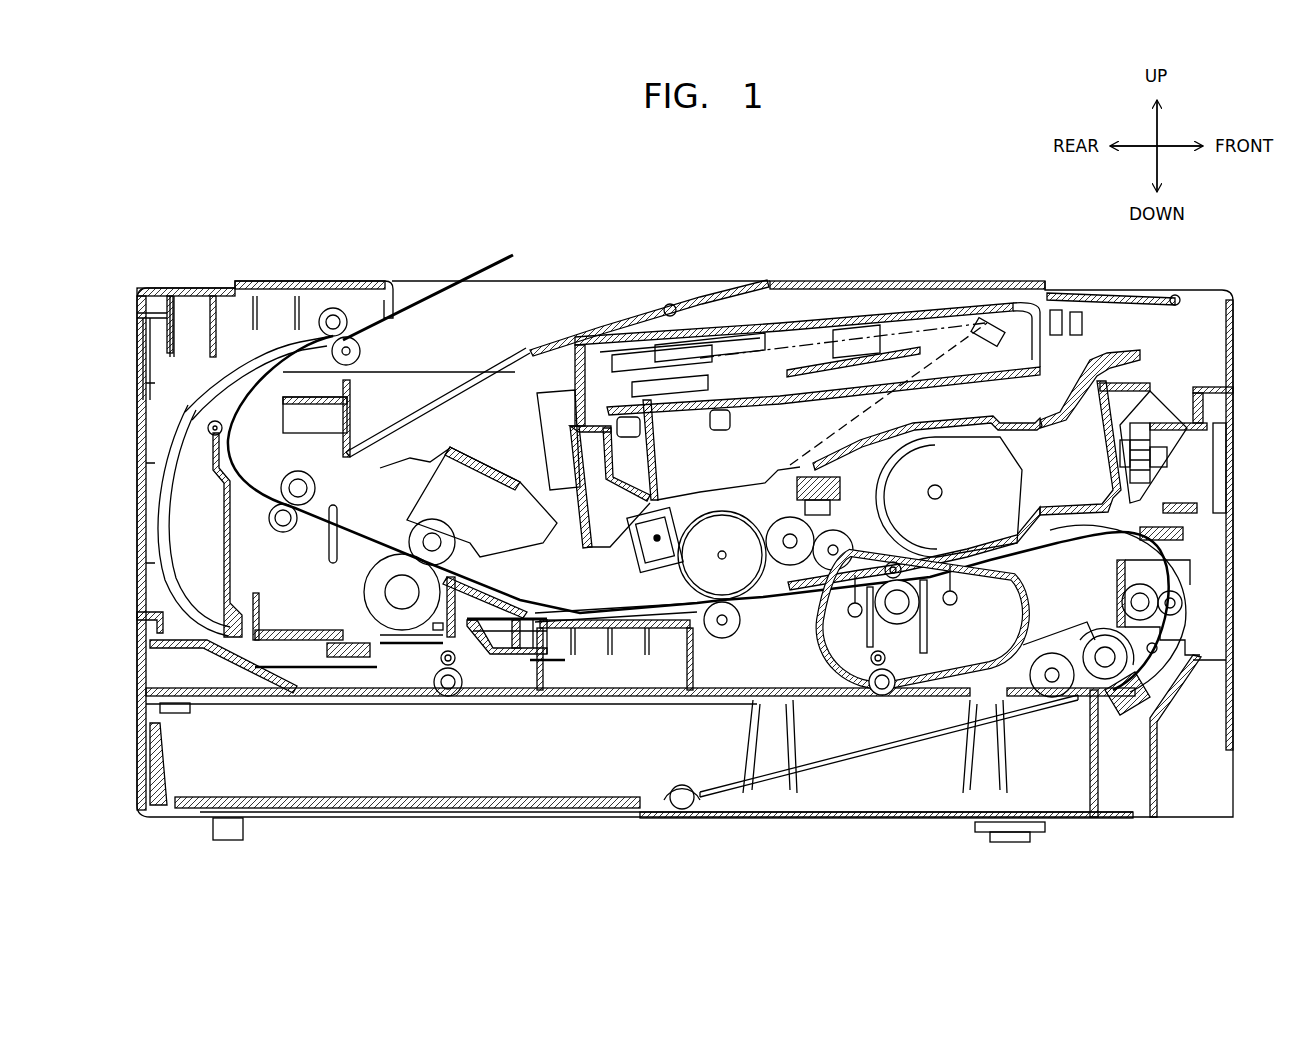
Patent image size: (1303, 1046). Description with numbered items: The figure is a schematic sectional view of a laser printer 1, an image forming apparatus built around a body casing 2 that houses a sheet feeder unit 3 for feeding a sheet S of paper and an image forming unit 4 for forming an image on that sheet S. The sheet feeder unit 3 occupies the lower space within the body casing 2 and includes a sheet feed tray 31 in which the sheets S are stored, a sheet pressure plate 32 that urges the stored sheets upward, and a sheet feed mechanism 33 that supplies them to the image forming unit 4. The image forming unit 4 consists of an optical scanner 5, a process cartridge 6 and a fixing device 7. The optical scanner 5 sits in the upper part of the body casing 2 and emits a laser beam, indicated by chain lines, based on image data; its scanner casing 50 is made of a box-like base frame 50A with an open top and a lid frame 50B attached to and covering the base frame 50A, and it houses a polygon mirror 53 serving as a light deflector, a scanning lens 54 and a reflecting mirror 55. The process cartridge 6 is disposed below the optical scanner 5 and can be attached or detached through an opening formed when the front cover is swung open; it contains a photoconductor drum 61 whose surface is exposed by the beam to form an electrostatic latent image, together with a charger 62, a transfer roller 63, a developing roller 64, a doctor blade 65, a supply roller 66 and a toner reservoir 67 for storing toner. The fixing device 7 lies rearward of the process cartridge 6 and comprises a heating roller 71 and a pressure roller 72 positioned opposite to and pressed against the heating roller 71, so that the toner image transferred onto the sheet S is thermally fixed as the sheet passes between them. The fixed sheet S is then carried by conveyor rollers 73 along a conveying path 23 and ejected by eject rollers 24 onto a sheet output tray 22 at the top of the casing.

The laser printer 1 is at (832, 183).
The body casing 2 is at (898, 280).
The sheet feeder unit 3 is at (1240, 592).
The image forming unit 4 is at (1195, 333).
The optical scanner 5 is at (838, 414).
The process cartridge 6 is at (1120, 350).
The fixing device 7 is at (423, 545).
The sheet output tray 22 is at (546, 342).
The conveying path 23 is at (228, 372).
The eject rollers 24 is at (345, 330).
The sheet feed tray 31 is at (1233, 705).
The sheet pressure plate 32 is at (838, 768).
The sheet feed mechanism 33 is at (1082, 632).
The scanner casing 50 is at (828, 320).
The base frame 50A is at (800, 385).
The lid frame 50B is at (615, 352).
The polygon mirror 53 is at (690, 340).
The scanning lens 54 is at (870, 335).
The reflecting mirror 55 is at (985, 320).
The photoconductor drum 61 is at (722, 511).
The charger 62 is at (660, 512).
The transfer roller 63 is at (720, 640).
The developing roller 64 is at (786, 524).
The doctor blade 65 is at (815, 518).
The supply roller 66 is at (845, 540).
The toner reservoir 67 is at (963, 480).
The heating roller 71 is at (445, 530).
The pressure roller 72 is at (375, 598).
The conveyor rollers 73 is at (262, 556).
The sheet S is at (484, 268).